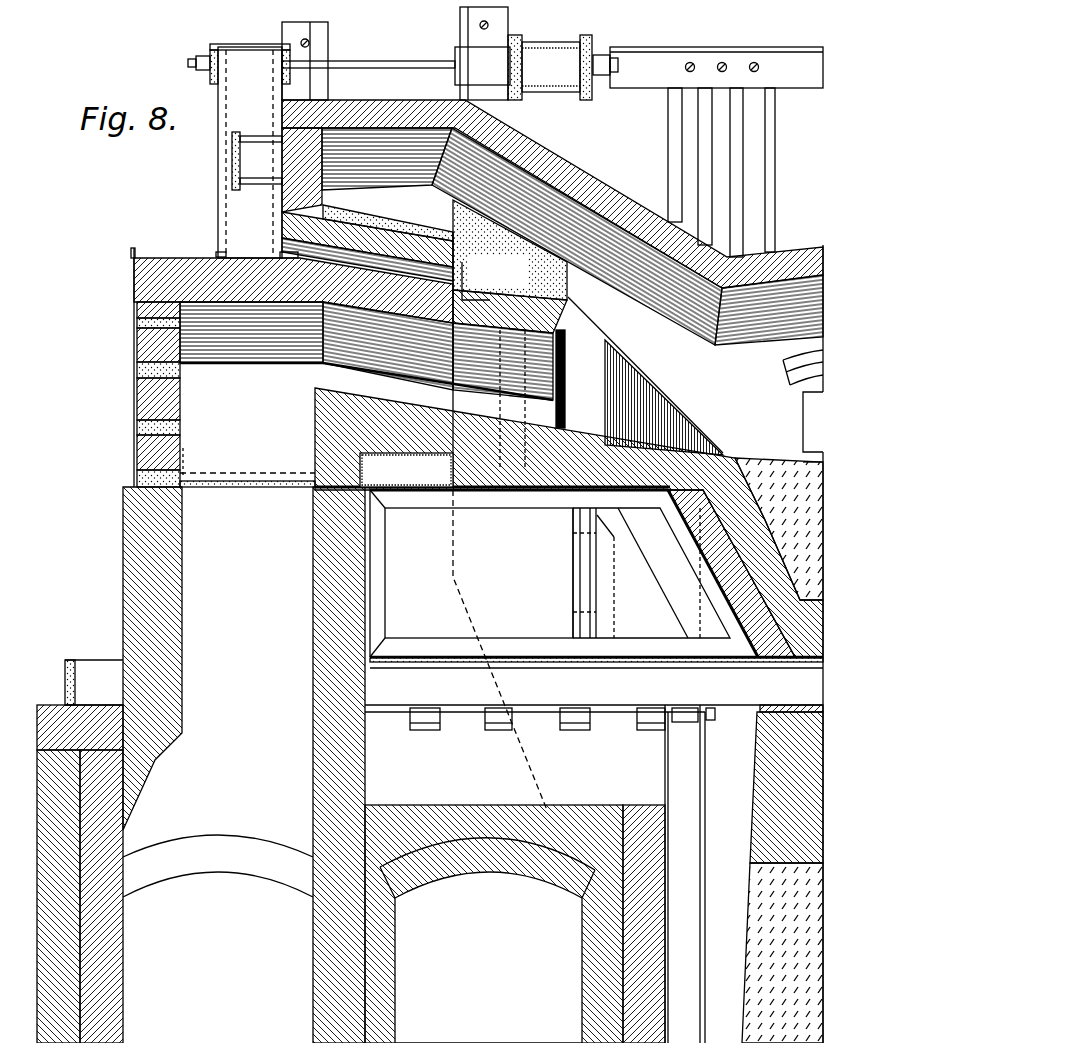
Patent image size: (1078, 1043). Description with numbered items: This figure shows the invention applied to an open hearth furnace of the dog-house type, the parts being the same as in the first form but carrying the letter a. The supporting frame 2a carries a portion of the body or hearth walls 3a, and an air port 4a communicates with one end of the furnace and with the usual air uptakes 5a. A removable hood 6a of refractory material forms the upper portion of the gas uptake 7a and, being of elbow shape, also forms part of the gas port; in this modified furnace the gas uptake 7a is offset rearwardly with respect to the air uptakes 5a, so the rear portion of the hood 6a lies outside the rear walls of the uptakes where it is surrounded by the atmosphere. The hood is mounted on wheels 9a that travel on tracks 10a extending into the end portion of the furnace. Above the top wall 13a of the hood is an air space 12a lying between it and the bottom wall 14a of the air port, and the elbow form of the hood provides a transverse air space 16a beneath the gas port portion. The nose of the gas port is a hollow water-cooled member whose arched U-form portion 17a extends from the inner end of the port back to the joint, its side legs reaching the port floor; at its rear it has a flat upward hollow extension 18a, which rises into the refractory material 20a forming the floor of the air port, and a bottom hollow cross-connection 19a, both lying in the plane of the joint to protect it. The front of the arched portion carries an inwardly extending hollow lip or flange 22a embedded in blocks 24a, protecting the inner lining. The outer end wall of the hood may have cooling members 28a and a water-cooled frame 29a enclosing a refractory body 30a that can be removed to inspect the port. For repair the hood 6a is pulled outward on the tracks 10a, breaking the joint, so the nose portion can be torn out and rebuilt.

The supporting frame 2a is at (668, 80).
The body or hearth walls 3a is at (803, 644).
The air port 4a is at (552, 222).
The air uptakes 5a is at (448, 596).
The removable hood 6a is at (137, 448).
The gas uptake 7a is at (201, 765).
The wheels 9a is at (199, 457).
The tracks 10a is at (262, 478).
The air space 12a is at (290, 248).
The top wall of the hood 13a is at (140, 289).
The bottom wall of the air port 14a is at (290, 224).
The transverse air space 16a is at (569, 522).
The arched U-form portion 17a is at (536, 305).
The flat upward hollow extension 18a is at (510, 250).
The bottom hollow cross-connection 19a is at (600, 558).
The refractory material 20a is at (464, 260).
The hollow lip or flange 22a is at (568, 352).
The blocks 24a is at (645, 376).
The cooling members 28a is at (266, 364).
The water-cooled frame 29a is at (137, 369).
The refractory body 30a is at (137, 346).